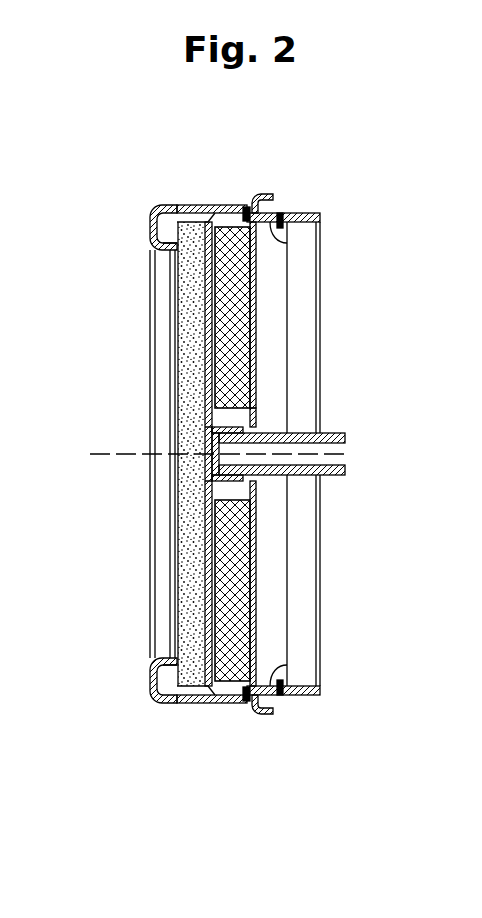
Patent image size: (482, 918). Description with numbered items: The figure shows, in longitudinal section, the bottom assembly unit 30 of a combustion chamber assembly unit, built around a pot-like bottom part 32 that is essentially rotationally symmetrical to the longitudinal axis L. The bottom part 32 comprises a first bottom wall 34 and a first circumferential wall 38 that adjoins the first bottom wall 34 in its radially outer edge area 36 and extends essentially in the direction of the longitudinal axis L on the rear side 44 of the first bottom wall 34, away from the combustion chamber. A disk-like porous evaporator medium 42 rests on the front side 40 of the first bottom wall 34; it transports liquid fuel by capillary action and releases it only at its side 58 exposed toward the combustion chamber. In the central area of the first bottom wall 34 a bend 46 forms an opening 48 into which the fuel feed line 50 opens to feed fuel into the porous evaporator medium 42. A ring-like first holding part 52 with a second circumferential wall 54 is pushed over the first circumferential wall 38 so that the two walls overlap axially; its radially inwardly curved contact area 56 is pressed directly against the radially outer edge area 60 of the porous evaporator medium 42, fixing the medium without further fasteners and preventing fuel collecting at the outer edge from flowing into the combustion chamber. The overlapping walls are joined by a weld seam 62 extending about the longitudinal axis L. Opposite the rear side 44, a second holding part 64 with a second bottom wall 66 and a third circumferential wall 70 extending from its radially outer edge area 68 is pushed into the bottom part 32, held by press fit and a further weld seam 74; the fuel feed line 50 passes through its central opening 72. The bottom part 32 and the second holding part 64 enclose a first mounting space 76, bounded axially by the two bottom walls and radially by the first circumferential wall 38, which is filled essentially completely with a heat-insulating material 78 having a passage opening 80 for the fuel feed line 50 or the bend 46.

The bottom assembly unit 30 is at (135, 702).
The bottom part 32 is at (197, 237).
The first bottom wall 34 is at (206, 277).
The radially outer edge area 36 is at (203, 674).
The first circumferential wall 38 is at (300, 213).
The front side 40 is at (206, 352).
The porous evaporator medium 42 is at (200, 598).
The rear side 44 is at (218, 334).
The bend 46 is at (255, 410).
The opening 48 is at (212, 460).
The fuel feed line 50 is at (346, 470).
The first holding part 52 is at (218, 205).
The second circumferential wall 54 is at (210, 702).
The contact area 56 is at (170, 665).
The side 58 is at (177, 323).
The radially outer edge area 60 is at (172, 247).
The weld seam 62 is at (247, 212).
The second holding part 64 is at (257, 585).
The second bottom wall 66 is at (257, 298).
The radially outer edge area 68 is at (266, 668).
The third circumferential wall 70 is at (283, 225).
The opening 72 is at (246, 429).
The weld seam 74 is at (281, 697).
The first mounting space 76 is at (215, 483).
The heat-insulating material 78 is at (237, 543).
The passage opening 80 is at (212, 425).
The longitudinal axis L is at (100, 452).